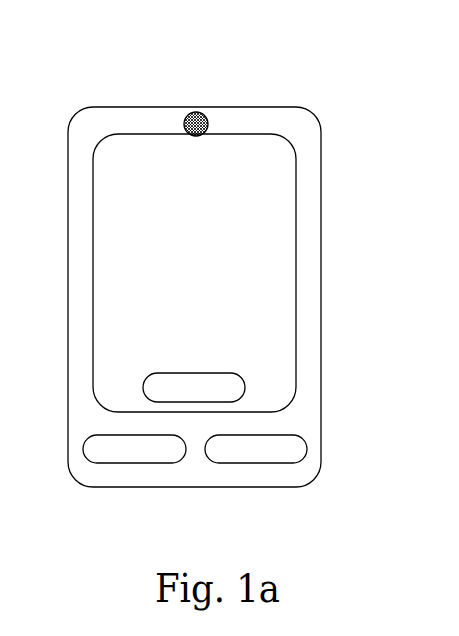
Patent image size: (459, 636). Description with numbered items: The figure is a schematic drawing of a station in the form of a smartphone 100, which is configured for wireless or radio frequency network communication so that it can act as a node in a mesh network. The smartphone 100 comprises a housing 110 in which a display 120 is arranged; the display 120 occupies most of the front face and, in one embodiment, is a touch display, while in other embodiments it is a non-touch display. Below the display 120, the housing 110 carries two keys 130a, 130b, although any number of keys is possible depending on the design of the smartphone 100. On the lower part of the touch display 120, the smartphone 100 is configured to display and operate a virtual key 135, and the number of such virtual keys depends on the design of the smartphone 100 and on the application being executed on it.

The smartphone 100 is at (256, 289).
The housing 110 is at (458, 189).
The display 120 is at (296, 272).
The virtual key 135 is at (245, 388).
The key 130a is at (133, 463).
The key 130b is at (307, 449).